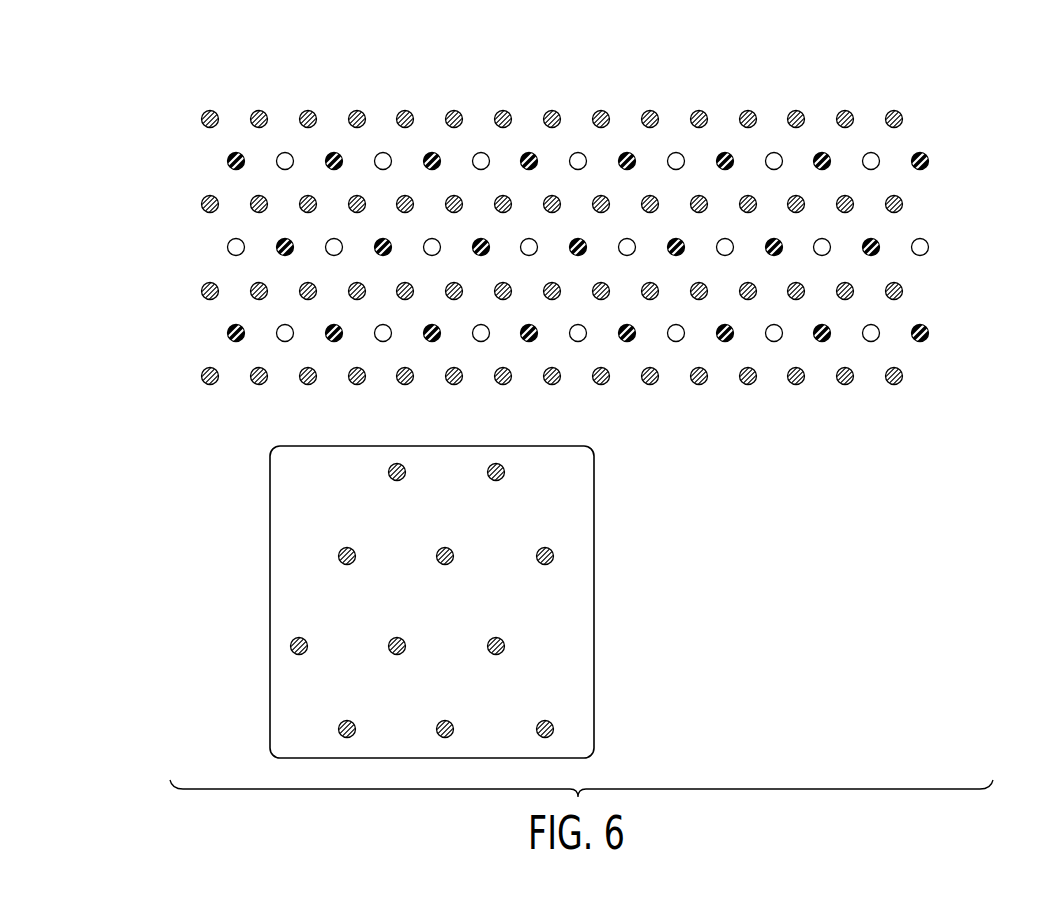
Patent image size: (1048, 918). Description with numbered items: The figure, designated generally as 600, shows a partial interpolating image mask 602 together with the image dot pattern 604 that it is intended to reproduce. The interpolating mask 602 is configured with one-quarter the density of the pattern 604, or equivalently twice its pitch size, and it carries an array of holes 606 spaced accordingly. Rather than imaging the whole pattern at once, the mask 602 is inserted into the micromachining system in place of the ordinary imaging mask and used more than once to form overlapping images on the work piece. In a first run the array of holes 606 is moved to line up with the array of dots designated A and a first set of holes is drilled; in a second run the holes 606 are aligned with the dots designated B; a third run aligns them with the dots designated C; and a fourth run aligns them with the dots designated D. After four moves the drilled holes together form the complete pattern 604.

The display system / pixel layout 600 is at (1046, 83).
The partial interpolating image mask 602 is at (422, 602).
The image dot pattern 604 is at (168, 108).
The array of holes 606 is at (292, 643).
The array of dots A is at (208, 110).
The array of dots B is at (257, 110).
The array of dots C is at (229, 158).
The array of dots D is at (278, 158).